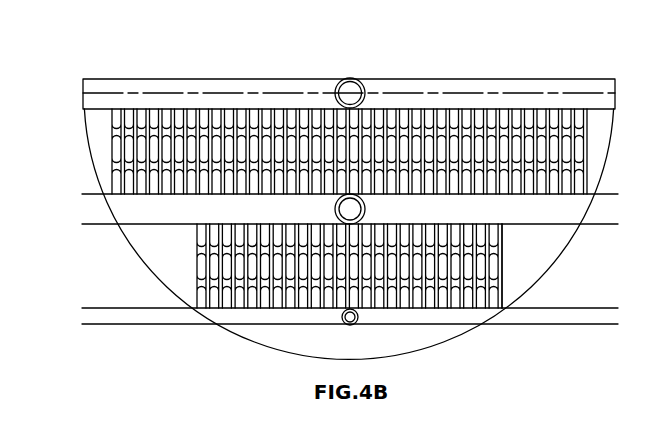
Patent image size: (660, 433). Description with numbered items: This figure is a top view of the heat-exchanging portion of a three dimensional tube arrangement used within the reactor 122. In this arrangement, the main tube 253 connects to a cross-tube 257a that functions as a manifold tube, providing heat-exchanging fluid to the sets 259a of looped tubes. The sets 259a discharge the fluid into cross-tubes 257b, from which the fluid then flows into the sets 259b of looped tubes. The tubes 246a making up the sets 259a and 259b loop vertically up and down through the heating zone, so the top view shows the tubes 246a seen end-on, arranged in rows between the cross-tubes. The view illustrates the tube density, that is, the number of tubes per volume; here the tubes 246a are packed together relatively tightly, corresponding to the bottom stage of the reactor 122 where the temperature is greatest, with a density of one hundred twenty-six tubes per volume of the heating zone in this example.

The reactor 122 is at (434, 346).
The main tube 253 is at (352, 78).
The cross-tube 257a is at (528, 79).
The cross-tubes 257b is at (548, 224).
The sets of looped tubes 259a is at (445, 202).
The sets of looped tubes 259b is at (185, 300).
The tubes 246a is at (502, 266).